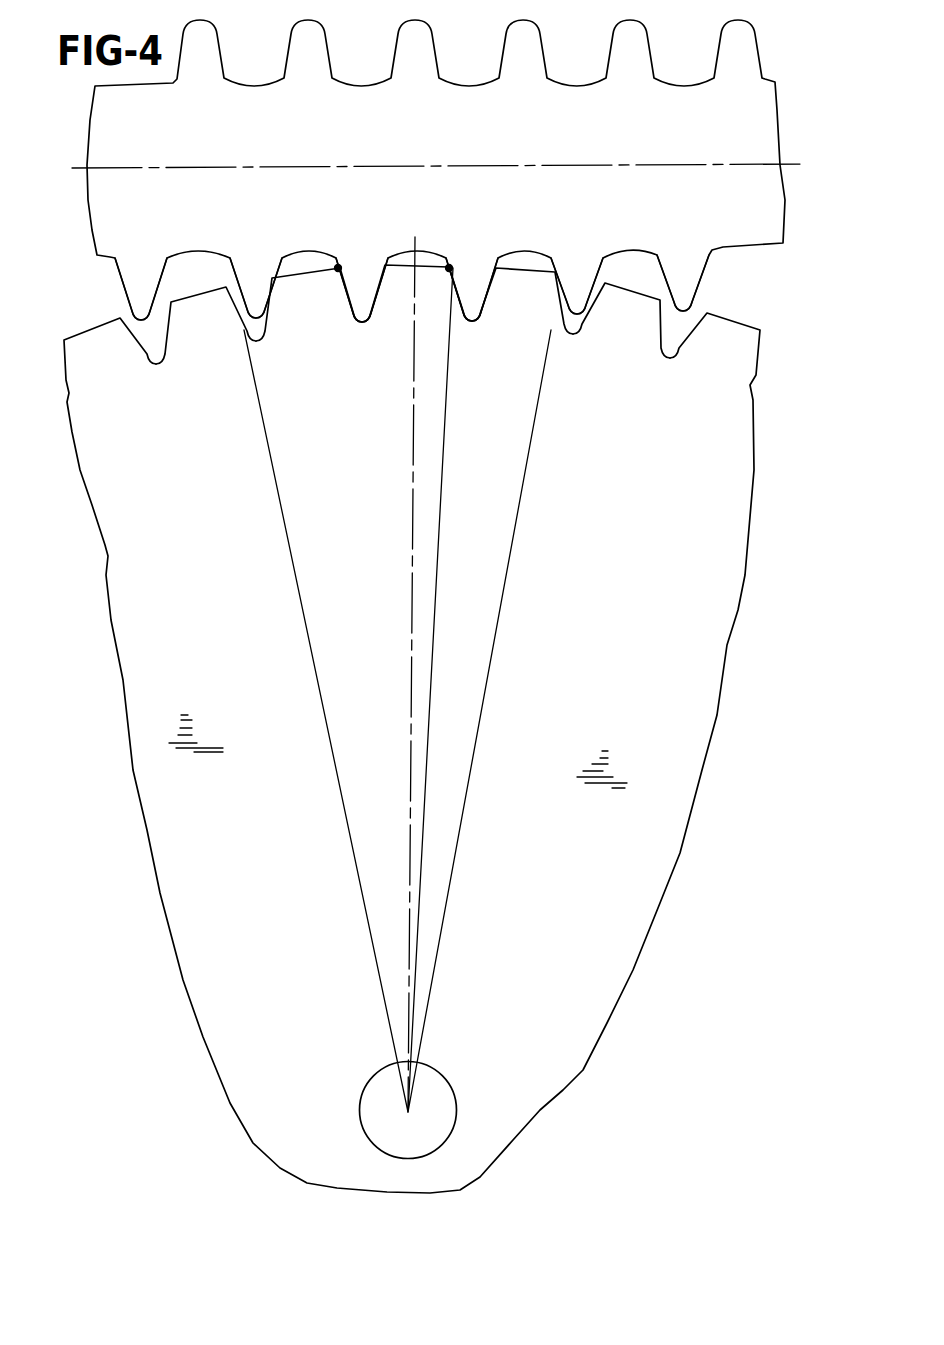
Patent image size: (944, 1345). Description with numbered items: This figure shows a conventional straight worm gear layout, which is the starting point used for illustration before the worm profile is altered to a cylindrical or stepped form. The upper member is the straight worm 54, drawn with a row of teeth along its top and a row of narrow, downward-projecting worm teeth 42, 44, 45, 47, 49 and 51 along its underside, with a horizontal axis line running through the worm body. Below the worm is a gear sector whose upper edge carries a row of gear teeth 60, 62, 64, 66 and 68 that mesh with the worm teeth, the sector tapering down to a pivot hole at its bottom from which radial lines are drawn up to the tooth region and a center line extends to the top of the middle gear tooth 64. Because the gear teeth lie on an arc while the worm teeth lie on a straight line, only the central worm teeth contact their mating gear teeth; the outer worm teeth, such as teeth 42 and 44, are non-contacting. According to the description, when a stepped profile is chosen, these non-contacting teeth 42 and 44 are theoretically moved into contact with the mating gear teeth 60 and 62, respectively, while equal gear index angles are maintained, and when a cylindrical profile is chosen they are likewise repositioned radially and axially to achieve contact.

The worm tooth 42 is at (156, 280).
The worm tooth 44 is at (267, 279).
The rack tooth 45 is at (374, 277).
The rack tooth 47 is at (480, 277).
The rack tooth 49 is at (592, 275).
The rack tooth 51 is at (691, 275).
The rack 54 is at (762, 162).
The mating gear tooth 60 is at (210, 335).
The mating gear tooth 62 is at (317, 317).
The sector gear tooth 64 is at (426, 317).
The sector gear tooth 66 is at (536, 314).
The sector gear tooth 68 is at (636, 334).